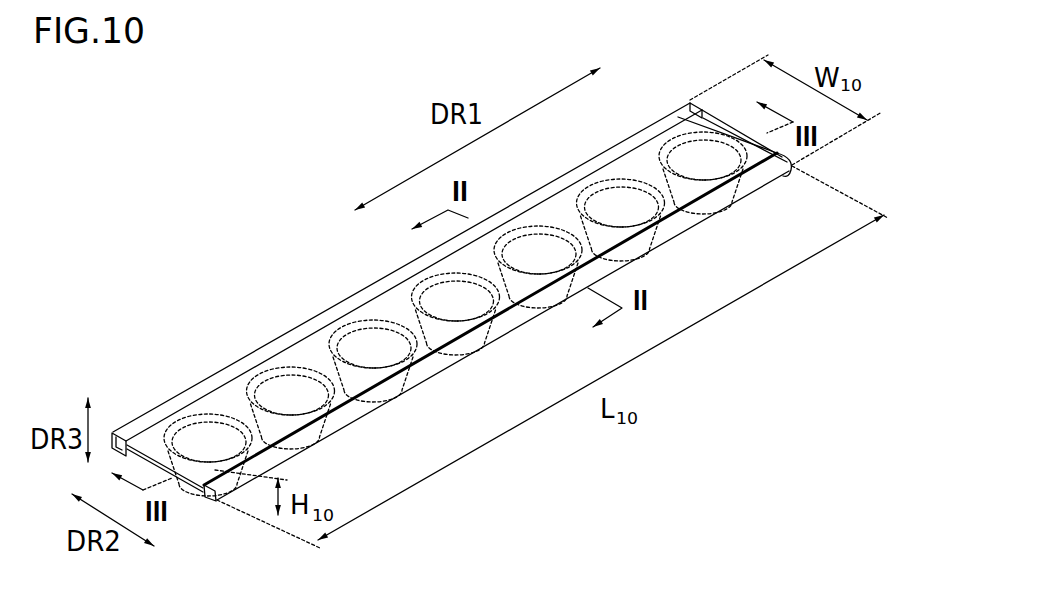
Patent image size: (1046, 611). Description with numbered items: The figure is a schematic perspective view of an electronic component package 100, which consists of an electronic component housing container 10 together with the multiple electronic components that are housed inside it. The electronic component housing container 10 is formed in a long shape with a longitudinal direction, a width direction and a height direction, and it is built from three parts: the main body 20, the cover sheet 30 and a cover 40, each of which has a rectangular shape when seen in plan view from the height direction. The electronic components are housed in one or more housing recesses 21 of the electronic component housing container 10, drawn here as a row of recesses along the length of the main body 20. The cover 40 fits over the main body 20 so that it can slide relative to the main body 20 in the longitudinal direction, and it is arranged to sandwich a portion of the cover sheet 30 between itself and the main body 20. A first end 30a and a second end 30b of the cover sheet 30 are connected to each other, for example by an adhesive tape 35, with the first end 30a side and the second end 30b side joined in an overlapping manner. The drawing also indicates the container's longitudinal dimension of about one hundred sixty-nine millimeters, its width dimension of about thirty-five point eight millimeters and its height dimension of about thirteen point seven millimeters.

The electronic component package 100 is at (282, 189).
The electronic component housing container 10 is at (307, 232).
The main body 20 is at (343, 322).
The housing recess 21 is at (397, 398).
The cover sheet 30 is at (292, 353).
The first end 30a is at (790, 182).
The second end 30b is at (747, 185).
The adhesive tape 35 is at (682, 128).
The cover 40 is at (218, 373).